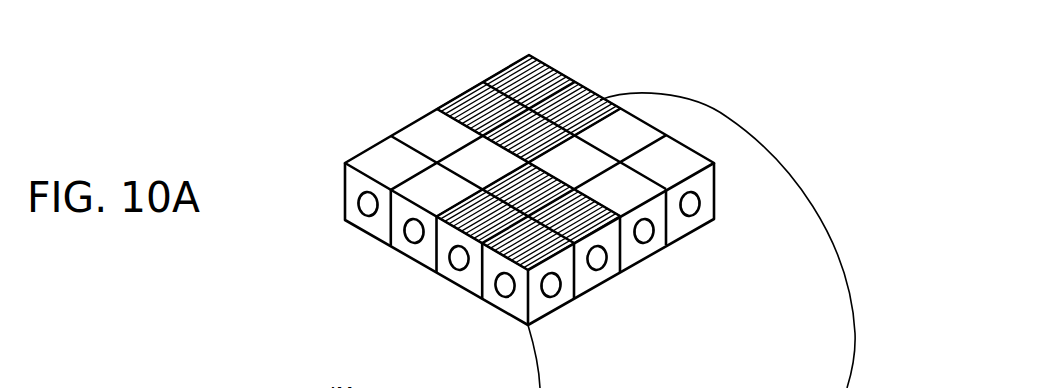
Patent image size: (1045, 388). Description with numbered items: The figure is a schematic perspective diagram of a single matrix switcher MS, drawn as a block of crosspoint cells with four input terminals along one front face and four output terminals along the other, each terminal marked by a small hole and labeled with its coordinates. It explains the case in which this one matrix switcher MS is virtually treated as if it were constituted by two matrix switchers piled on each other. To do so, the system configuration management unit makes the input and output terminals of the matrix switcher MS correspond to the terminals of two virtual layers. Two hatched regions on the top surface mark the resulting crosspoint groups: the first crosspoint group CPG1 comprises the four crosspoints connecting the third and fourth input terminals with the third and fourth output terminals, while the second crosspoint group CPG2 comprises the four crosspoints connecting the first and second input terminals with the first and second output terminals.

The matrix switcher MS is at (357, 61).
The first crosspoint group CPG1 is at (530, 86).
The second crosspoint group CPG2 is at (520, 194).